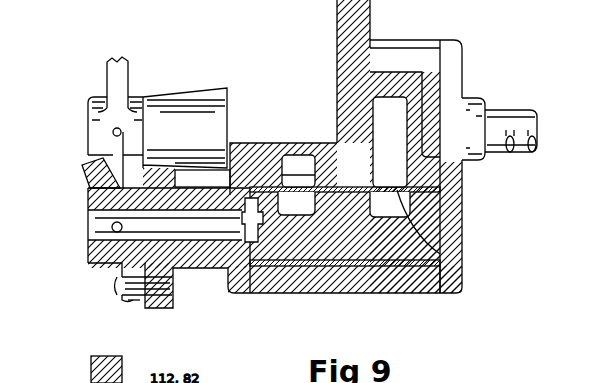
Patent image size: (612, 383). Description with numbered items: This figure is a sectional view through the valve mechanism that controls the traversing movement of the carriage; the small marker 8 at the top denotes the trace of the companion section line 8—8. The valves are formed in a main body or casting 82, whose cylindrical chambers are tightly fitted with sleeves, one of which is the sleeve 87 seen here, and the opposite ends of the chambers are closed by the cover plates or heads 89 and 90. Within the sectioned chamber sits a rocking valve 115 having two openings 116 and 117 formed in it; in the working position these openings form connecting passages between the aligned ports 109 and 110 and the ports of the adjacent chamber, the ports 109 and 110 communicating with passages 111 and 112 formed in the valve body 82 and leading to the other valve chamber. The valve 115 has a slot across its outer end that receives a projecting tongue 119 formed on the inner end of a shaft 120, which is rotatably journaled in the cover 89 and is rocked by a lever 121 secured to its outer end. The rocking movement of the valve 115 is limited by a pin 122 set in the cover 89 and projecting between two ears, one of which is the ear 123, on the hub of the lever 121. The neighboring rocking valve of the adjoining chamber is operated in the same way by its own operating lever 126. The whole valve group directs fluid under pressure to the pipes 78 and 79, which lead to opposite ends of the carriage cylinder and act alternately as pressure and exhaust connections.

The stem assembly 8 is at (138, 96).
The pipe 78 is at (522, 150).
The pipe 79 is at (497, 118).
The main body or casting 82 is at (297, 57).
The sleeve 87 is at (397, 257).
The cover plate or head 89 is at (241, 55).
The cover plate or head 90 is at (449, 58).
The port 109 is at (310, 190).
The port 110 is at (440, 254).
The passage 111 is at (296, 185).
The passage 112 is at (390, 157).
The rocking valve 115 is at (433, 228).
The opening 116 is at (298, 210).
The opening 117 is at (440, 292).
The projecting tongue 119 is at (225, 275).
The shaft 120 is at (95, 228).
The lever 121 is at (82, 172).
The pin 122 is at (123, 287).
The ear 123 is at (133, 299).
The operating lever 126 is at (115, 75).